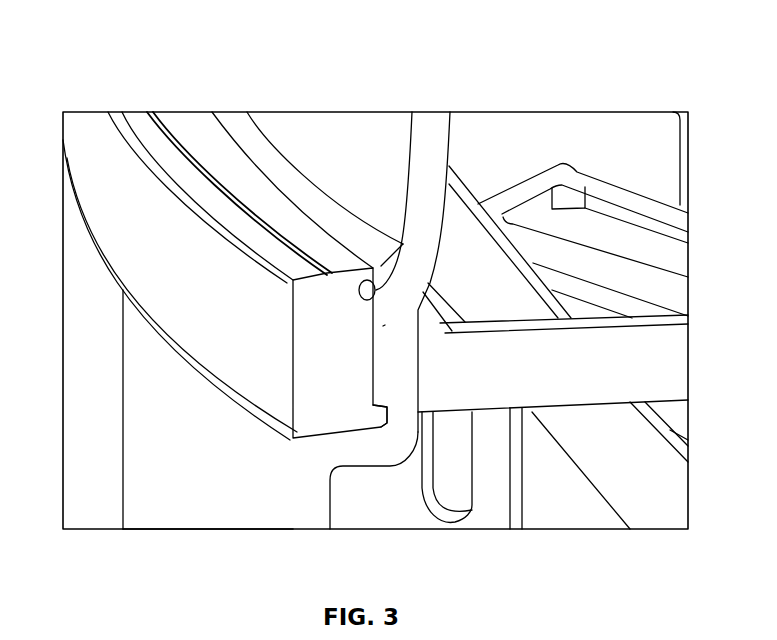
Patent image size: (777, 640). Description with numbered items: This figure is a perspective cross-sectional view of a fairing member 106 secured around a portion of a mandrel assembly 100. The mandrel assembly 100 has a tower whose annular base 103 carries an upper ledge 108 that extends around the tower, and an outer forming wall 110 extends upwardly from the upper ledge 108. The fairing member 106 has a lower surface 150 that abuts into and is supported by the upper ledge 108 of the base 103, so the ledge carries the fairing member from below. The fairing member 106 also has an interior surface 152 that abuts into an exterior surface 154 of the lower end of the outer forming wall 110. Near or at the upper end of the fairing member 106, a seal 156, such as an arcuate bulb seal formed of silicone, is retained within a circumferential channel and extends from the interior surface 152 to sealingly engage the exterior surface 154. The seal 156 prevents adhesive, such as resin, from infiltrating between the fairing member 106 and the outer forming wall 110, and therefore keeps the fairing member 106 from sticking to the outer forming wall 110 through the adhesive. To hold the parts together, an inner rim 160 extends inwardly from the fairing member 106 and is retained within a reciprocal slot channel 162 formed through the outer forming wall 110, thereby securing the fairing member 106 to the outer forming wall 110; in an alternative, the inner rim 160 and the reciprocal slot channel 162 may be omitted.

The mandrel assembly 100 is at (305, 90).
The annular base 103 is at (227, 510).
The fairing member 106 is at (202, 310).
The upper ledge 108 is at (362, 435).
The outer forming wall 110 is at (373, 158).
The lower surface 150 is at (345, 422).
The interior surface 152 is at (375, 355).
The exterior surface 154 is at (418, 312).
The seal 156 is at (383, 326).
The inner rim 160 is at (386, 424).
The reciprocal slot channel 162 is at (380, 426).